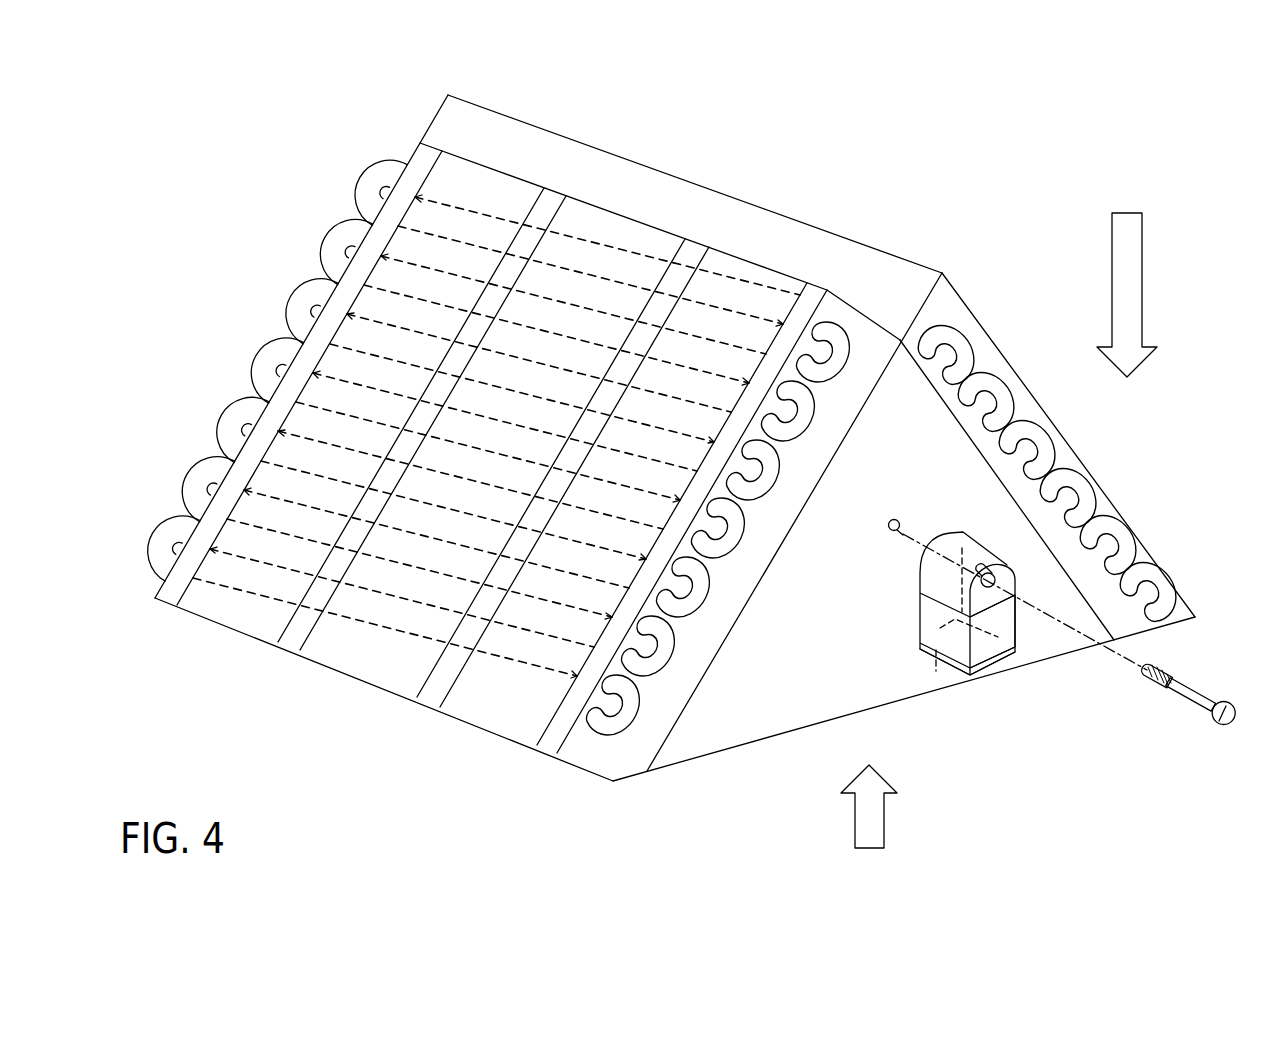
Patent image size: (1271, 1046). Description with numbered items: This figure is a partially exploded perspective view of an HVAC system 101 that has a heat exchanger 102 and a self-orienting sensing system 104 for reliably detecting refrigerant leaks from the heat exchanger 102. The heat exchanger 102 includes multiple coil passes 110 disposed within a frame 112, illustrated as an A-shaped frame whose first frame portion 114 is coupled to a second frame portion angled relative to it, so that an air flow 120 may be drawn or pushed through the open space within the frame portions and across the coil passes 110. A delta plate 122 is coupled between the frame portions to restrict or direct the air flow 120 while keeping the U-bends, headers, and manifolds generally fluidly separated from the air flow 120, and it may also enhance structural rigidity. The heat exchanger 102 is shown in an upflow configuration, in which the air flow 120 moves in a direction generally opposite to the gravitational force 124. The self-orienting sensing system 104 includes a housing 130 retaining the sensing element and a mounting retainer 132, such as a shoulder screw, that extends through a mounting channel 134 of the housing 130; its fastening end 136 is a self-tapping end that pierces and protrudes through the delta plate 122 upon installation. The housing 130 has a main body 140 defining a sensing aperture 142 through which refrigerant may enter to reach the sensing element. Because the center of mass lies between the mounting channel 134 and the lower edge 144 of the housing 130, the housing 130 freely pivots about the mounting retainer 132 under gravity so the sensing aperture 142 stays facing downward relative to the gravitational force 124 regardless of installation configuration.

The HVAC system 101 is at (918, 100).
The heat exchanger 102 is at (628, 146).
The self-orienting sensing system 104 is at (1078, 680).
The coil passes 110 is at (385, 632).
The frame 112 is at (840, 236).
The first frame portion 114 is at (494, 738).
The air flow 120 is at (886, 815).
The delta plate 122 is at (724, 703).
The gravitational force 124 is at (1142, 280).
The housing 130 is at (966, 530).
The mounting retainer 132 is at (1183, 705).
The mounting channel 134 is at (978, 577).
The fastening end 136 is at (1162, 670).
The main body 140 is at (918, 620).
The sensing aperture 142 is at (934, 662).
The lower edge 144 is at (1006, 653).